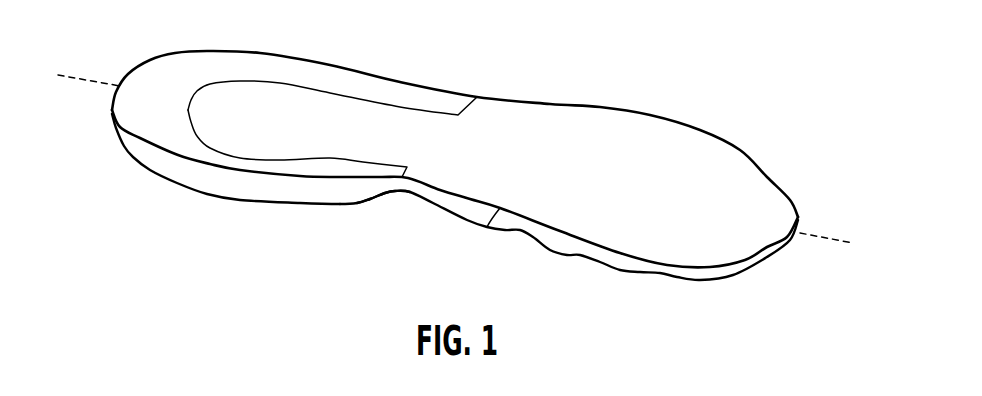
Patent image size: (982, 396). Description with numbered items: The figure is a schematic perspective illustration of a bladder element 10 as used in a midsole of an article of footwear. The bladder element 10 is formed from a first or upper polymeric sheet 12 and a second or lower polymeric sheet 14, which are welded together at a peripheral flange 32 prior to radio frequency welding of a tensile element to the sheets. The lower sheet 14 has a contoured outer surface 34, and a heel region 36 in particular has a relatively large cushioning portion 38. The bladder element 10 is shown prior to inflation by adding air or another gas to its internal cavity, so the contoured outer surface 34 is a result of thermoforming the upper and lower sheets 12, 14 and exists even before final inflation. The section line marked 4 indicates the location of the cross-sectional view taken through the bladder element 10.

The bladder element 10 is at (428, 152).
The upper polymeric sheet 12 is at (670, 123).
The lower polymeric sheet 14 is at (207, 181).
The peripheral flange 32 is at (487, 227).
The contoured outer surface 34 is at (370, 212).
The heel region 36 is at (130, 110).
The cushioning portion 38 is at (147, 152).
The section line 4- 4 is at (58, 75).